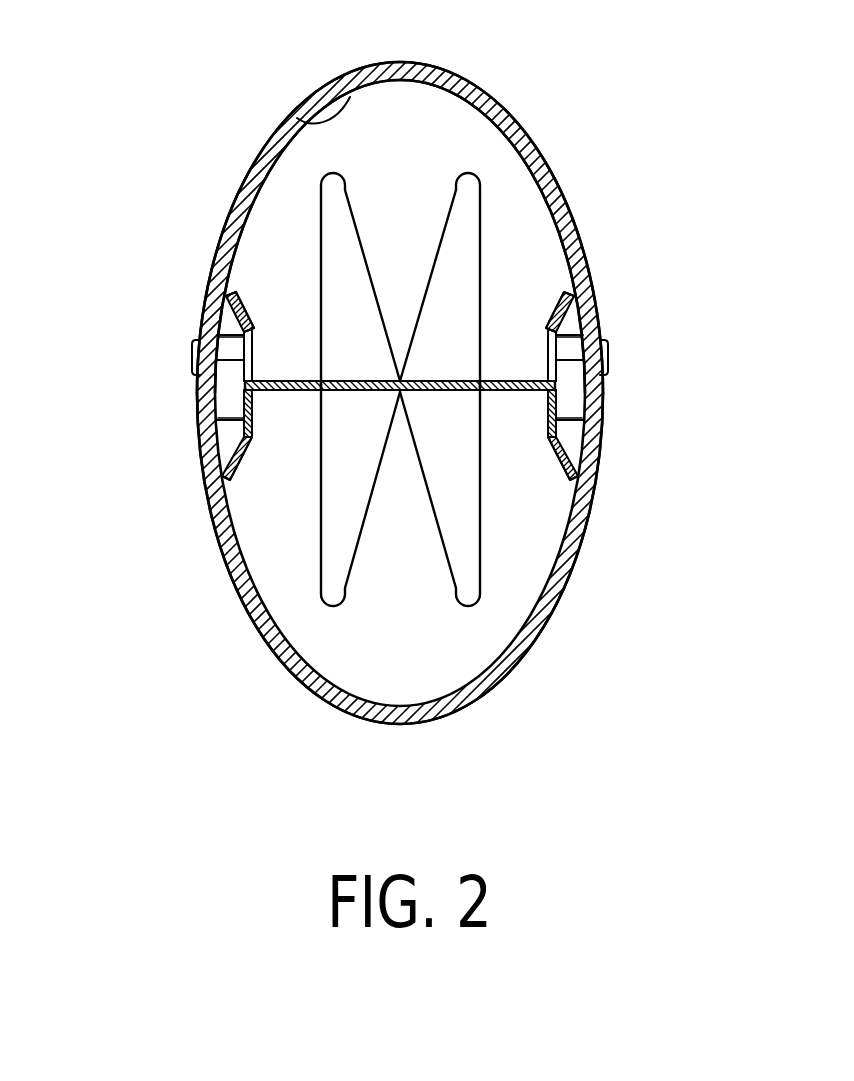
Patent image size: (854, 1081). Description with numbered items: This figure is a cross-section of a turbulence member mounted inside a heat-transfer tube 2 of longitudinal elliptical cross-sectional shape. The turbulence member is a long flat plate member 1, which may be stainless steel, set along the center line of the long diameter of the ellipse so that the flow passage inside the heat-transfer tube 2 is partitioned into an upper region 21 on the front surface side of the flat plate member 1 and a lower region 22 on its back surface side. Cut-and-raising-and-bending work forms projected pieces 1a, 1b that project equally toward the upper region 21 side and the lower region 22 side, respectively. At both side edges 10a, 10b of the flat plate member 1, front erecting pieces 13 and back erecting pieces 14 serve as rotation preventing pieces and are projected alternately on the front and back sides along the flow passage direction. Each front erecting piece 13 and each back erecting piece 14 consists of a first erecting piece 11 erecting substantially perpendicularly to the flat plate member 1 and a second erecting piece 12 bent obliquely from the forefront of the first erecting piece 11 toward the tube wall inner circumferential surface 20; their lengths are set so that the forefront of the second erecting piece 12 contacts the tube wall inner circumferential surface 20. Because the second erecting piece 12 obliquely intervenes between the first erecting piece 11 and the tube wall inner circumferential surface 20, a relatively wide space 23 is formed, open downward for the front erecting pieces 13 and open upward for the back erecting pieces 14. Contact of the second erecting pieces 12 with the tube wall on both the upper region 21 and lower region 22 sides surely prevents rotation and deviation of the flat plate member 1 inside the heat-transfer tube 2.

The flat plate member 1 is at (308, 381).
The projected piece 1a is at (330, 240).
The projected piece 1b is at (470, 267).
The heat-transfer tube 2 is at (556, 177).
The side edge 10a is at (561, 385).
The side edge 10b is at (239, 385).
The first erecting piece 11 is at (228, 365).
The second erecting piece 12 is at (228, 322).
The front erecting piece 13 is at (90, 297).
The back erecting piece 14 is at (122, 425).
The tube wall inner circumferential surface 20 is at (300, 113).
The upper region 21 is at (433, 113).
The lower region 22 is at (420, 680).
The space 23 is at (240, 347).